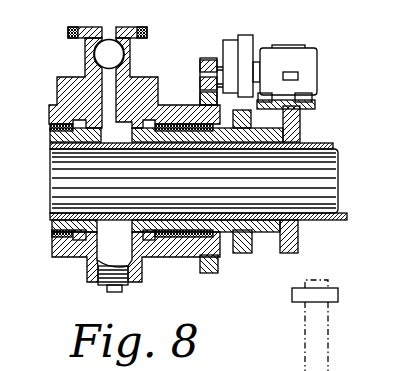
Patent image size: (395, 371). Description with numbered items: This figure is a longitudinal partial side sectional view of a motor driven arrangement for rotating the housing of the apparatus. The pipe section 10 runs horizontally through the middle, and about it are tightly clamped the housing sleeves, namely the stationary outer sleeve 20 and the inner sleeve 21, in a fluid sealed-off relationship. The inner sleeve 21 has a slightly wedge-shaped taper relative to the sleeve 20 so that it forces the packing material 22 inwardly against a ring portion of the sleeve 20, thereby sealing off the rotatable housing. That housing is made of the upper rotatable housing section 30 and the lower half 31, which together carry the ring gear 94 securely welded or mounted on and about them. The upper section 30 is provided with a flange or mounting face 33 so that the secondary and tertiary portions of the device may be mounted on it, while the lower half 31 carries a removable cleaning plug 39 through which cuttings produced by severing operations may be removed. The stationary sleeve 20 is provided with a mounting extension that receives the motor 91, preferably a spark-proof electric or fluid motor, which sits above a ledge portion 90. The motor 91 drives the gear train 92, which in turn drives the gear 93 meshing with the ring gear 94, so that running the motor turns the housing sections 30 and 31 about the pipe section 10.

The pipe section 10 is at (50, 173).
The stationary sleeve 20 is at (300, 126).
The inner sleeve 21 is at (256, 253).
The packing material 22 is at (52, 130).
The rotatable housing section 30 is at (49, 112).
The lower half of rotatable housing 31 is at (52, 237).
The flange or mounting face 33 is at (147, 27).
The cleaning plug 39 is at (122, 290).
The ledge portion 90 is at (314, 104).
The motor 91 is at (318, 58).
The gear train 92 is at (251, 37).
The gear 93 is at (198, 60).
The ring gear 94 is at (200, 100).